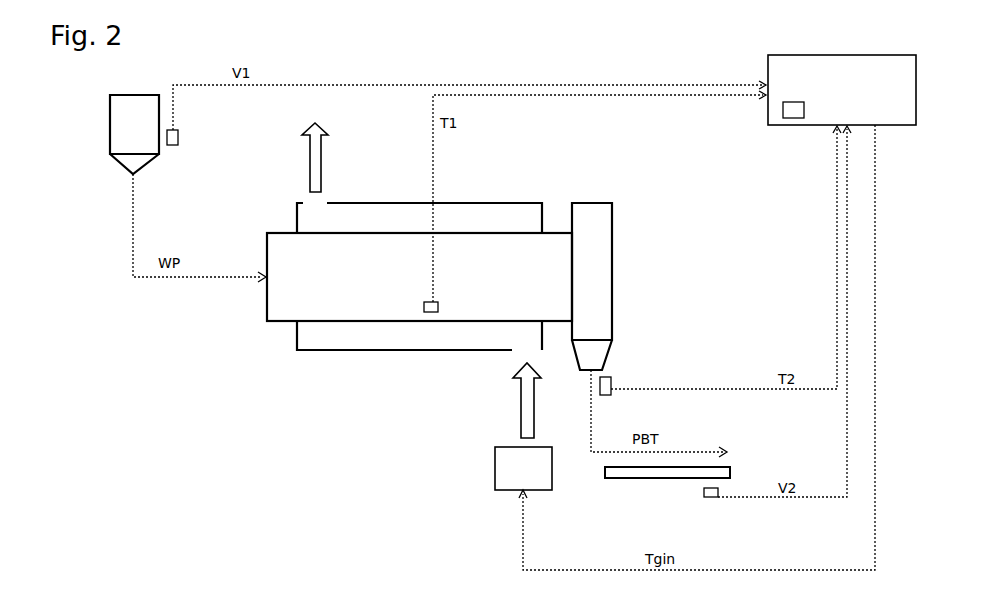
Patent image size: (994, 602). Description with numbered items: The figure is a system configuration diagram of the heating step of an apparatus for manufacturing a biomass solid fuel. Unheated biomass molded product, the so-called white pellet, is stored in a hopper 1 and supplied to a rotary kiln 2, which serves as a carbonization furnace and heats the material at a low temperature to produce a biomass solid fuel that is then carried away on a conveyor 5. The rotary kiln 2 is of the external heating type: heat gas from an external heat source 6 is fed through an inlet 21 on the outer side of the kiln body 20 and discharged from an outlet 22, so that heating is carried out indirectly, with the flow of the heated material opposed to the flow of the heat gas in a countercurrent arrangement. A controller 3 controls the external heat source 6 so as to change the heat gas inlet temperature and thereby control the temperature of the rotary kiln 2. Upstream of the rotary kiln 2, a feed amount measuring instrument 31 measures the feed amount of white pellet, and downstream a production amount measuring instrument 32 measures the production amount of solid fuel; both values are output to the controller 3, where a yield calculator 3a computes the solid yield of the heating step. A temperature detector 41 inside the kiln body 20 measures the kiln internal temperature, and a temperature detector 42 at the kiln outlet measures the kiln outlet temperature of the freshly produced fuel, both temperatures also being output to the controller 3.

The hopper 1 is at (108, 132).
The rotary kiln 2 is at (409, 319).
The controller 3 is at (842, 109).
The yield calculator 3a is at (792, 125).
The conveyor 5 is at (616, 479).
The external heat source 6 is at (523, 468).
The kiln body 20 is at (326, 321).
The inlet 21 is at (523, 352).
The outlet 22 is at (318, 202).
The feed amount measuring instrument 31 is at (180, 138).
The production amount measuring instrument 32 is at (711, 498).
The temperature detector 41 is at (440, 304).
The temperature detector 42 is at (612, 377).